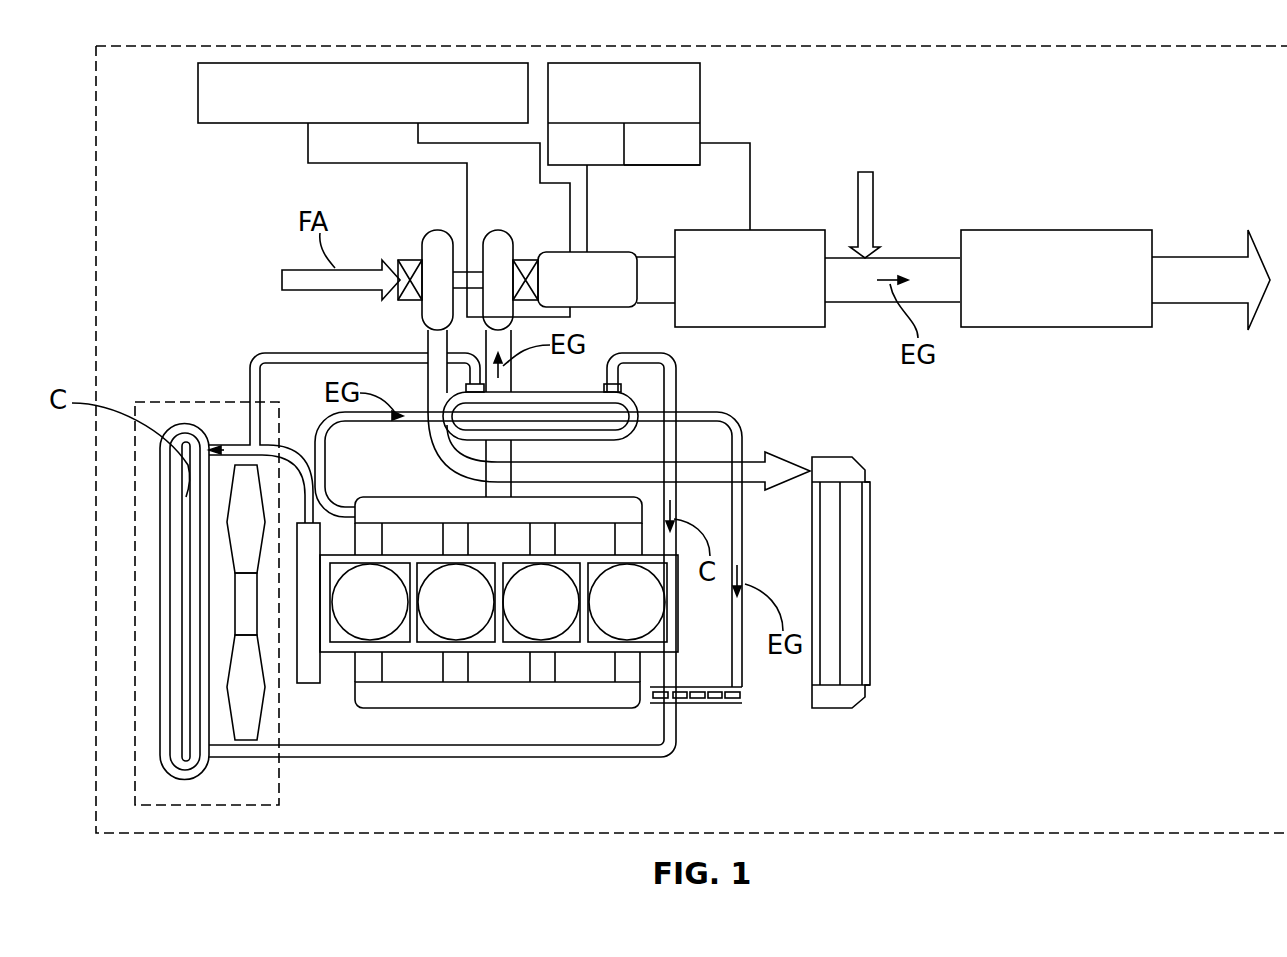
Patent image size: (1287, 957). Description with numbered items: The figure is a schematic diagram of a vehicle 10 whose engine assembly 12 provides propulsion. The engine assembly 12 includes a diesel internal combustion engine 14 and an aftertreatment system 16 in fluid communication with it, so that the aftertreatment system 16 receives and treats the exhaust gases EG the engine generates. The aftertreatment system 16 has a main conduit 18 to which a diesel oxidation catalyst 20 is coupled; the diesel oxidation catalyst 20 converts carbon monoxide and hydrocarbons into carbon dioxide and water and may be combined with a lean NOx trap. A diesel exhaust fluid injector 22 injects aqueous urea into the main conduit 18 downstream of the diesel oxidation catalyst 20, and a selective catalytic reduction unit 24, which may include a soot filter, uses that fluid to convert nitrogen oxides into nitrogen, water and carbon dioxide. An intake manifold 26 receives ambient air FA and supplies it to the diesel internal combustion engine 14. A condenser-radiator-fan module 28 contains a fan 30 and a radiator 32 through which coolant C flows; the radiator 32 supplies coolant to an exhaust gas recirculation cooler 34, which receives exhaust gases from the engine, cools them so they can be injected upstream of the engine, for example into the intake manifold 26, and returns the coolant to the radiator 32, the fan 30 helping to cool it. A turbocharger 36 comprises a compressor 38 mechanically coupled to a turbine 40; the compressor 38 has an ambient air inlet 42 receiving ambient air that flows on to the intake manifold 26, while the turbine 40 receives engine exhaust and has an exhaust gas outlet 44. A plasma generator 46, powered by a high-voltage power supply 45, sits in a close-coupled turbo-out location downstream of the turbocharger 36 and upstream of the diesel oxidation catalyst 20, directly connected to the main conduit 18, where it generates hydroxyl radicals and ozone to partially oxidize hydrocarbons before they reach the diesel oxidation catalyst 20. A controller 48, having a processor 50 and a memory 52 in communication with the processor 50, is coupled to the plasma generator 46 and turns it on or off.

The vehicle 10 is at (95, 742).
The engine assembly 12 is at (447, 762).
The diesel internal combustion engine 14 is at (498, 708).
The aftertreatment system 16 is at (1110, 184).
The main conduit 18 is at (845, 256).
The diesel oxidation catalyst 20 is at (752, 328).
The diesel exhaust fluid injector 22 is at (873, 225).
The selective catalytic reduction unit 24 is at (1057, 328).
The intake manifold 26 is at (871, 583).
The condenser-radiator-fan module 28 is at (203, 398).
The fan 30 is at (247, 732).
The radiator 32 is at (160, 603).
The exhaust gas recirculation cooler 34 is at (540, 392).
The turbocharger 36 is at (408, 213).
The compressor 38 is at (438, 230).
The turbine 40 is at (498, 230).
The ambient air inlet 42 is at (410, 300).
The exhaust gas outlet 44 is at (527, 258).
The high-voltage power supply 45 is at (198, 93).
The plasma generator 46 is at (613, 251).
The controller 48 is at (700, 93).
The processor 50 is at (571, 157).
The memory 52 is at (648, 157).